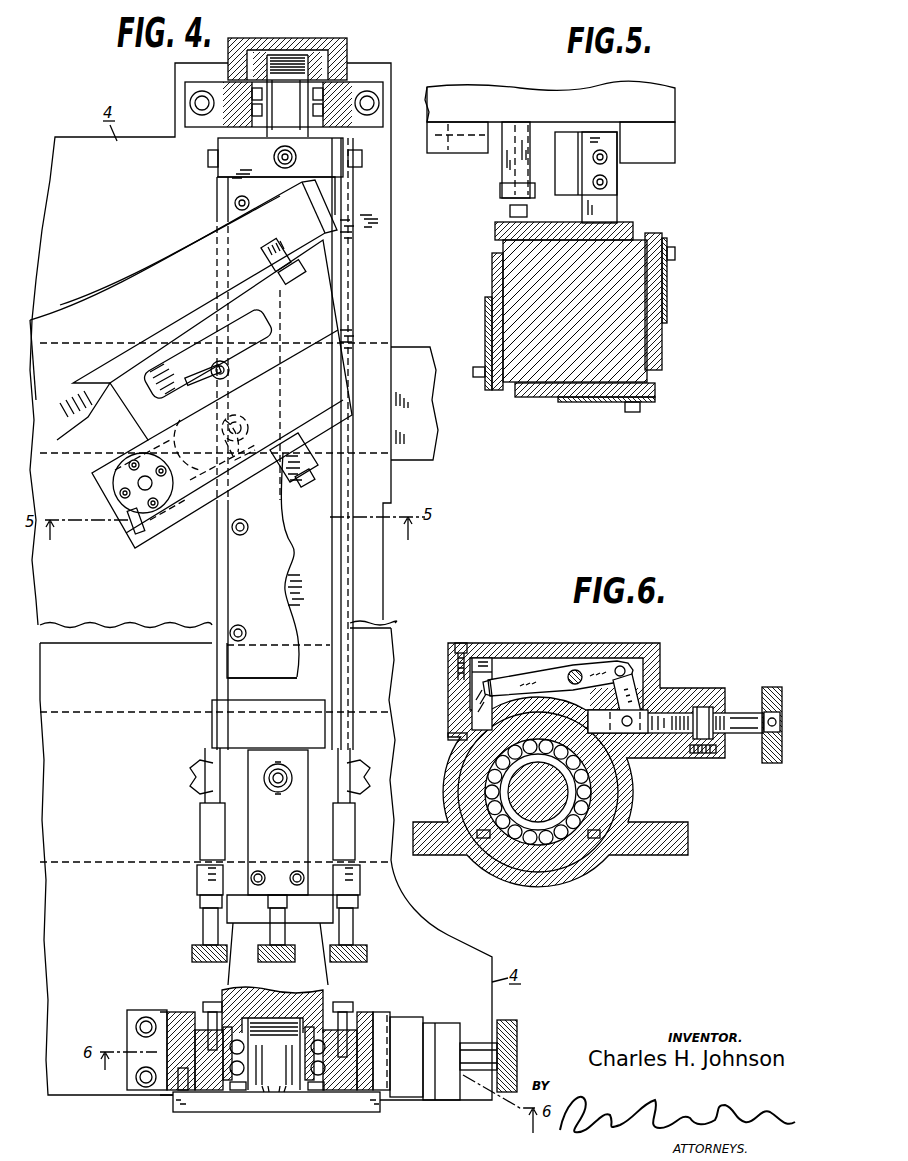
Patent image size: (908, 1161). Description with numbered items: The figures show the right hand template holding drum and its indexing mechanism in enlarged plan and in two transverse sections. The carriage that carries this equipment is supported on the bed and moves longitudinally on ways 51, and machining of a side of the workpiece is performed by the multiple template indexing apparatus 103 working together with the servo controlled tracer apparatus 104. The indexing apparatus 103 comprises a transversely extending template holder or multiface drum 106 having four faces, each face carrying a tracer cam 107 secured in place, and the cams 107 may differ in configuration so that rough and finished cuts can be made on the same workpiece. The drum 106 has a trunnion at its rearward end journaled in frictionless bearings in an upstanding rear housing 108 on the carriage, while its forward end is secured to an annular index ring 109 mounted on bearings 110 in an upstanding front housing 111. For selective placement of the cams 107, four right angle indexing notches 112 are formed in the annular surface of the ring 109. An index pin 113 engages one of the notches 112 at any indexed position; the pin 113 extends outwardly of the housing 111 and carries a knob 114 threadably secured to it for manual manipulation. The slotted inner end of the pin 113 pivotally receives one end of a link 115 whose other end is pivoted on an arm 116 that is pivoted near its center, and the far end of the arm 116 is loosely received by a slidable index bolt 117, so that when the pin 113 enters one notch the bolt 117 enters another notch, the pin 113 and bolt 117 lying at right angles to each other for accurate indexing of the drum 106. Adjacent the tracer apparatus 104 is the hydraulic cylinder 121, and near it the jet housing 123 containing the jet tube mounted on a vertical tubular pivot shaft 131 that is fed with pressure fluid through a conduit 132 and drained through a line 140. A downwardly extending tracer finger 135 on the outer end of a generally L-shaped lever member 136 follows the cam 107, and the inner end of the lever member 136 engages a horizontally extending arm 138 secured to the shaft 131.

In FIG. 4, the ways 51 is at (435, 443).
In FIG. 4, the multiple template indexing apparatus 103 is at (369, 603).
In FIG. 4, the servo controlled tracer apparatus 104 is at (174, 241).
In FIG. 4, the multiface drum 106 is at (333, 670).
In FIG. 5, the multiface drum 106 is at (647, 378).
In FIG. 4, the tracer cam 107 is at (352, 322).
In FIG. 5, the tracer cam 107 is at (552, 226).
In FIG. 4, the rear housing 108 is at (348, 92).
In FIG. 4, the index ring 109 is at (337, 1092).
In FIG. 6, the index ring 109 is at (567, 847).
In FIG. 4, the bearings 110 is at (234, 1092).
In FIG. 6, the bearings 110 is at (513, 850).
In FIG. 4, the front housing 111 is at (177, 1012).
In FIG. 6, the front housing 111 is at (650, 787).
In FIG. 6, the indexing notches 112 is at (470, 741).
In FIG. 6, the index pin 113 is at (647, 710).
In FIG. 4, the knob 114 is at (517, 1028).
In FIG. 6, the knob 114 is at (768, 687).
In FIG. 6, the link 115 is at (640, 678).
In FIG. 6, the arm 116 is at (543, 673).
In FIG. 6, the index bolt 117 is at (492, 680).
In FIG. 4, the hydraulic cylinder 121 is at (112, 283).
In FIG. 4, the jet housing 123 is at (318, 396).
In FIG. 5, the jet housing 123 is at (668, 102).
In FIG. 4, the tubular pivot shaft 131 is at (93, 468).
In FIG. 4, the conduit 132 is at (133, 520).
In FIG. 4, the tracer finger 135 is at (286, 500).
In FIG. 5, the tracer finger 135 is at (590, 212).
In FIG. 4, the lever member 136 is at (270, 440).
In FIG. 5, the lever member 136 is at (520, 148).
In FIG. 4, the arm 138 is at (193, 418).
In FIG. 4, the drain line 140 is at (214, 372).